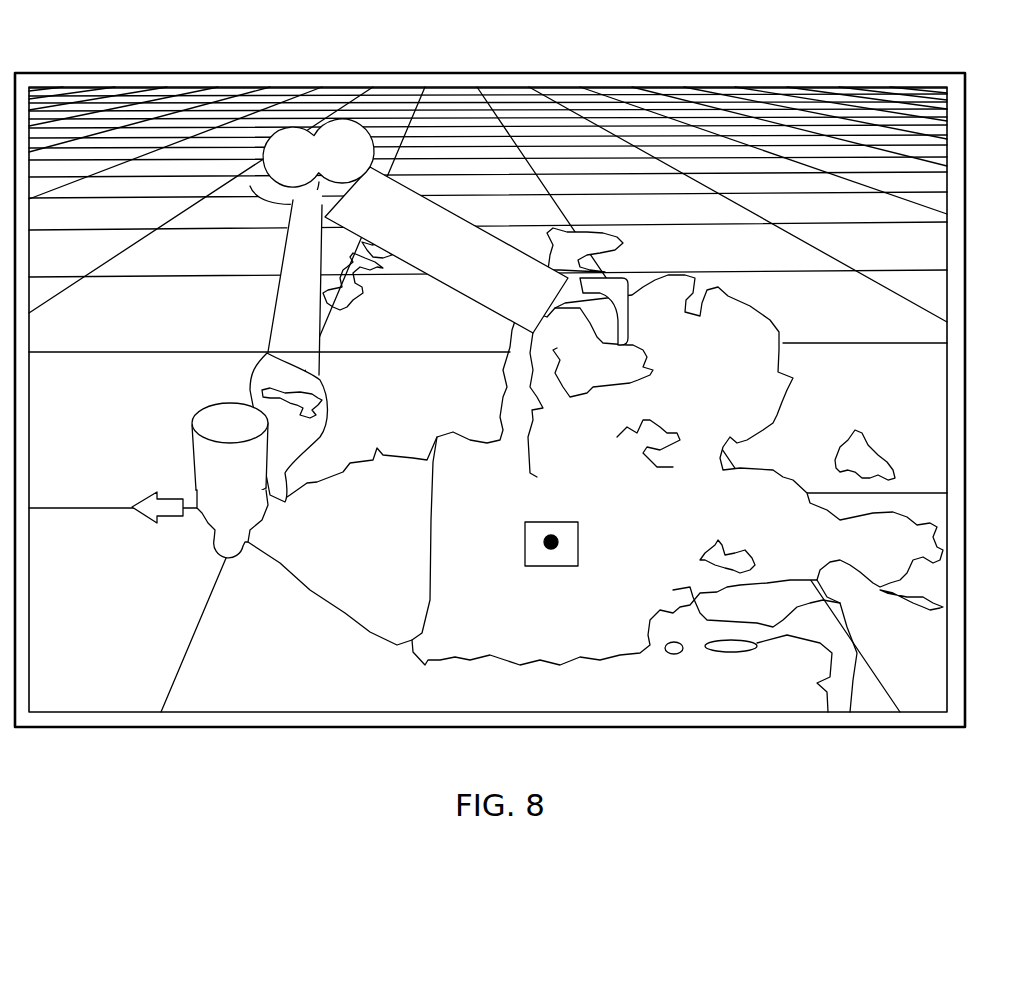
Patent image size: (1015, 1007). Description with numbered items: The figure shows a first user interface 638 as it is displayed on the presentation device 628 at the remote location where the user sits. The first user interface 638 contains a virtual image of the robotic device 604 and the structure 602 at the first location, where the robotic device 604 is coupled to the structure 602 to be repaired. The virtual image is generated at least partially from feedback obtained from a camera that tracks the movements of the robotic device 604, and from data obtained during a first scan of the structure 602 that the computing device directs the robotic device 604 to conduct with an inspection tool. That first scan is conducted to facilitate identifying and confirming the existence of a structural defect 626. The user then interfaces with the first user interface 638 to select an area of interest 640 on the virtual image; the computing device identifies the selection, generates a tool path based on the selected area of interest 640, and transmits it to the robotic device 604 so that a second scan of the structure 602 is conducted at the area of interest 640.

The structure 602 is at (800, 433).
The robotic device 604 is at (240, 314).
The structural defect 626 is at (532, 576).
The presentation device 628 is at (934, 73).
The first user interface 638 is at (750, 110).
The area of interest 640 is at (580, 538).